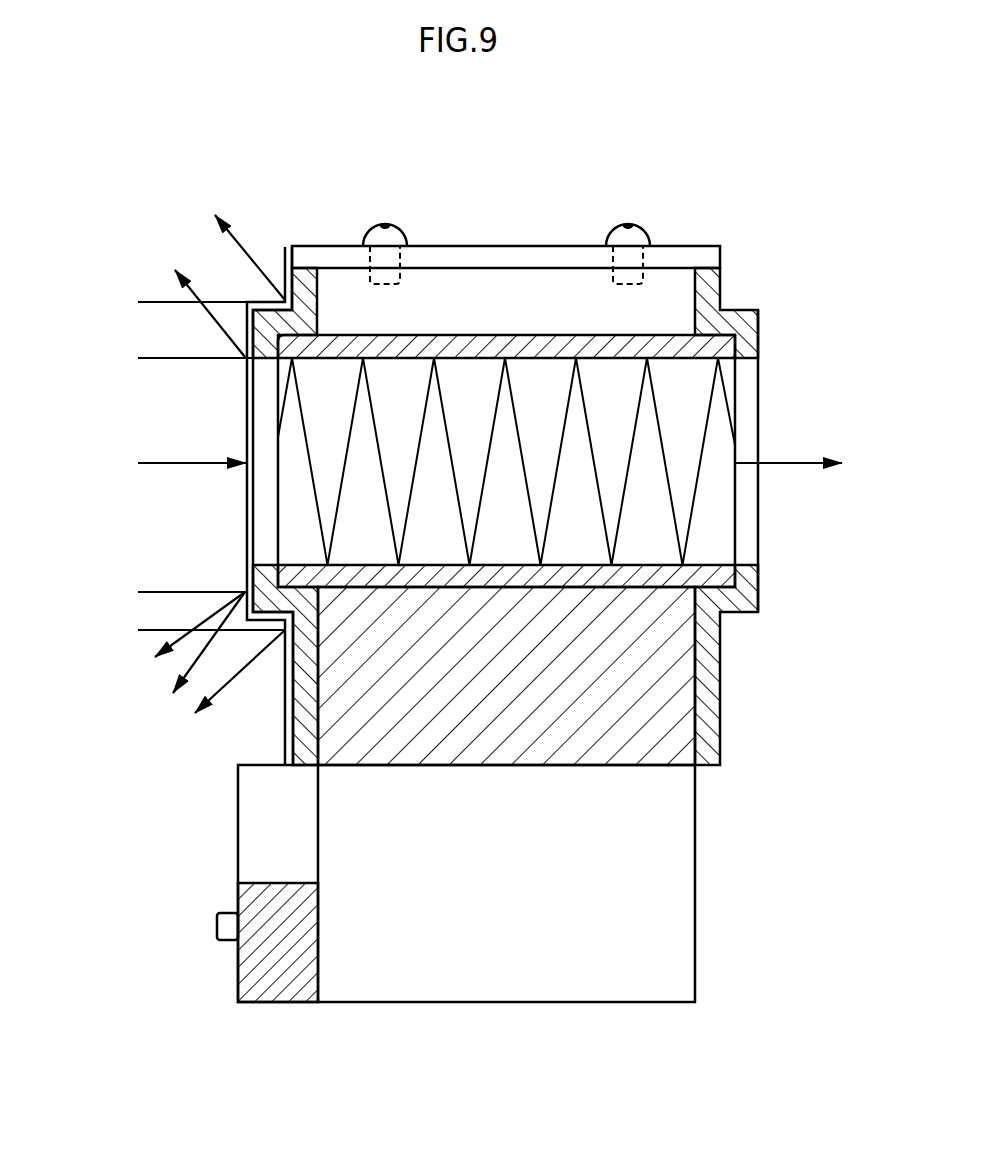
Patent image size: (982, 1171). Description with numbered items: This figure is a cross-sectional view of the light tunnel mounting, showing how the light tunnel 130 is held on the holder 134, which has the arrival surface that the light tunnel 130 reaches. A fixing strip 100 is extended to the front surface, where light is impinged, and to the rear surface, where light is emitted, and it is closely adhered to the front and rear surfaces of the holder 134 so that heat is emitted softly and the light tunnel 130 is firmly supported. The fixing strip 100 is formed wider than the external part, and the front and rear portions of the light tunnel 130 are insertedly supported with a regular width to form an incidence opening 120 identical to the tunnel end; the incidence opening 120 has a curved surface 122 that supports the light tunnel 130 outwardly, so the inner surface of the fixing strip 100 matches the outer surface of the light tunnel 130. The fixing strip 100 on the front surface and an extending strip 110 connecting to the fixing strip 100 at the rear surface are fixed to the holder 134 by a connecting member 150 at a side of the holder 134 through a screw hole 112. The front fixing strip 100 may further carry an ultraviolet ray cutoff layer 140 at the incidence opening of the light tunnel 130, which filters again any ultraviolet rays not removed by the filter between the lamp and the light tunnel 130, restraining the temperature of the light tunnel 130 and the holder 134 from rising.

The fixing strip 100 is at (710, 705).
The extending strip 110 is at (333, 257).
The screw hole 112 is at (403, 252).
The incidence opening 120 is at (263, 362).
The curved surface 122 is at (300, 585).
The light tunnel 130 is at (723, 343).
The holder 134 is at (673, 920).
The ultraviolet ray cutoff layer 140 is at (288, 735).
The connecting member 150 is at (363, 247).